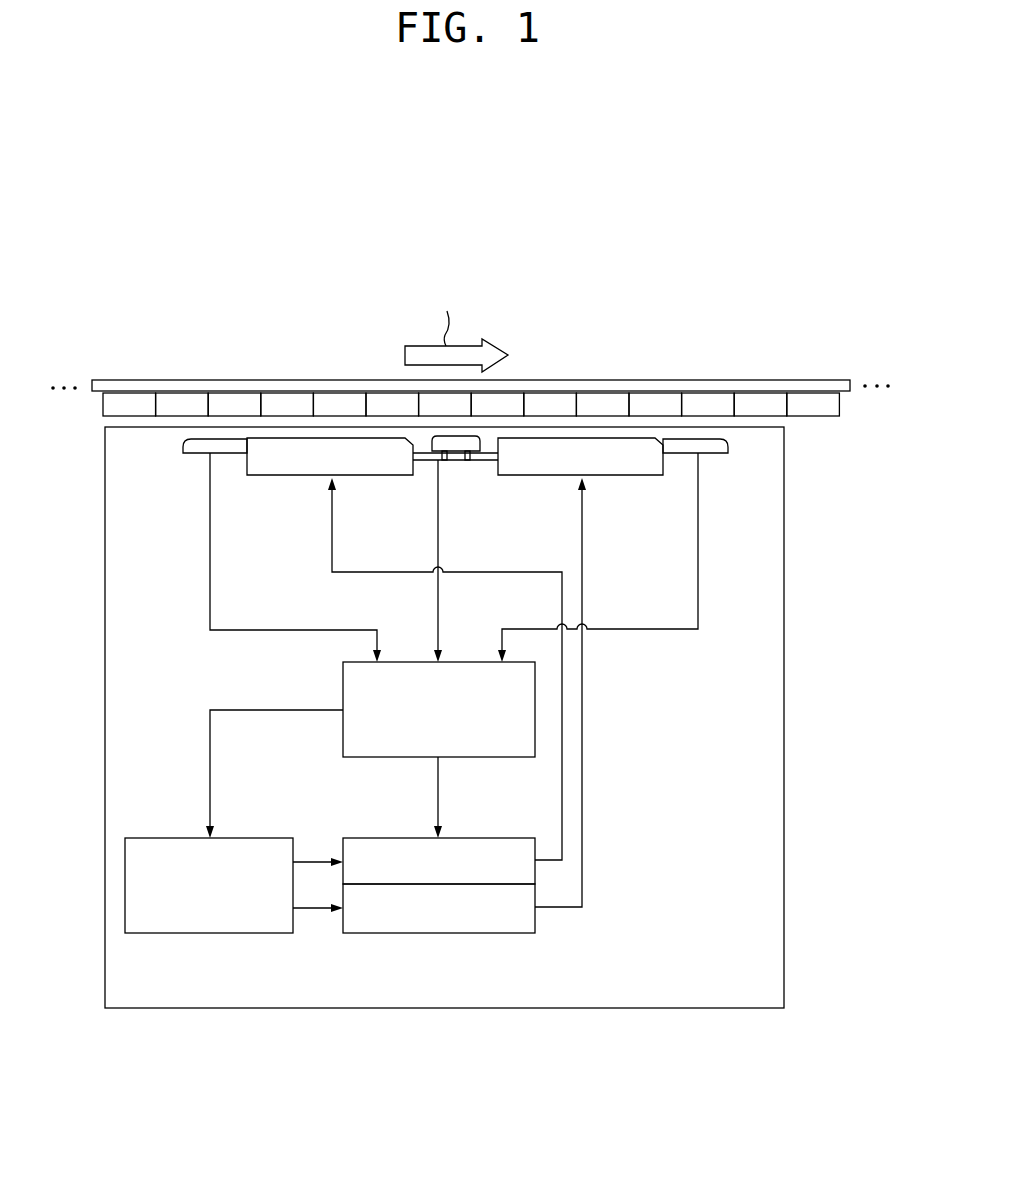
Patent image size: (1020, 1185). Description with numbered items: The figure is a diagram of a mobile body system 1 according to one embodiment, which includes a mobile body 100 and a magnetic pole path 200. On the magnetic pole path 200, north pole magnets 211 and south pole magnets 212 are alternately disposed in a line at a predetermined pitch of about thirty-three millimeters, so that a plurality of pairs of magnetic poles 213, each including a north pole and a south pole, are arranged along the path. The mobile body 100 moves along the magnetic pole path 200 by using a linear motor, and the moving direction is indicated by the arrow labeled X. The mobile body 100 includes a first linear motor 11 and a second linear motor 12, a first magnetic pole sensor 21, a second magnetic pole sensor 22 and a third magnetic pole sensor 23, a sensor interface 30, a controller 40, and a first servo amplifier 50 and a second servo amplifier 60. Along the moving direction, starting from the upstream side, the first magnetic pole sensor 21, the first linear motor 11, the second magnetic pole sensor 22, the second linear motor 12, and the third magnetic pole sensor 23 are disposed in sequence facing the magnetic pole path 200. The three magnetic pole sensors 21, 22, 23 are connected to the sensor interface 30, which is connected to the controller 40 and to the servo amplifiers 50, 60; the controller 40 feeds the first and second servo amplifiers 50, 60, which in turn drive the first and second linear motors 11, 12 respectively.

The mobile body system 1 is at (806, 296).
The magnetic pole path 200 is at (817, 380).
The pairs of magnetic poles 213 is at (213, 342).
The north pole magnets 211 is at (123, 393).
The south pole magnets 212 is at (180, 393).
The mobile body 100 is at (784, 554).
The third magnetic pole sensor 23 is at (195, 455).
The second linear motor 12 is at (287, 477).
The second magnetic pole sensor 22 is at (473, 460).
The first linear motor 11 is at (647, 477).
The first magnetic pole sensor 21 is at (722, 455).
The sensor interface 30 is at (343, 678).
The controller 40 is at (150, 838).
The second servo amplifier 60 is at (366, 838).
The first servo amplifier 50 is at (373, 933).